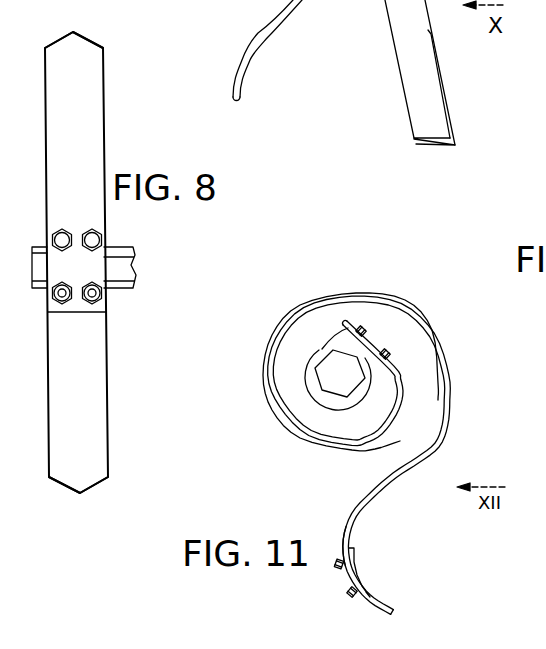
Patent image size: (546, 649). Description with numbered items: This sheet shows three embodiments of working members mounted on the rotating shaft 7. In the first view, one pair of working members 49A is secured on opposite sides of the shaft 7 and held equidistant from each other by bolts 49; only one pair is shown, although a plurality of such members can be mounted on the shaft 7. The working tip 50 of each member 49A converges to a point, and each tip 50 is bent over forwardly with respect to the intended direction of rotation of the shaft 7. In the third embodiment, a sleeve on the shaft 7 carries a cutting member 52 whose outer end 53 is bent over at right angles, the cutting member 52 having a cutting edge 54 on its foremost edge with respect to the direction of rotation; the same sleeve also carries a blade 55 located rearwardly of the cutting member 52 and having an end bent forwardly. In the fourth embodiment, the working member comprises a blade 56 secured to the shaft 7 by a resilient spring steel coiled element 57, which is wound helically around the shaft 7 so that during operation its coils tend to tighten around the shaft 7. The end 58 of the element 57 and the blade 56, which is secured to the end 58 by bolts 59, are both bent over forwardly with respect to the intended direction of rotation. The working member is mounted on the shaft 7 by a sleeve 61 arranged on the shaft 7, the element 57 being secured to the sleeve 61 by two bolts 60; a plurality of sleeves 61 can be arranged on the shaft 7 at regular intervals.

In FIG. 8, the shaft 7 is at (127, 266).
In FIG. 11, the shaft 7 is at (326, 362).
In FIG. 8, the bolts 49 is at (88, 229).
In FIG. 8, the working members 49A is at (103, 108).
In FIG. 8, the working tip 50 is at (97, 44).
In FIG. 9, the cutting member 52 is at (386, 20).
In FIG. 9, the outer end 53 is at (431, 146).
In FIG. 9, the cutting edge 54 is at (452, 115).
In FIG. 9, the blade 55 is at (263, 40).
In FIG. 11, the blade 56 is at (382, 603).
In FIG. 11, the resilient spring steel coiled element 57 is at (451, 377).
In FIG. 11, the end of the coiled element 58 is at (352, 531).
In FIG. 11, the bolts 59 is at (348, 593).
In FIG. 11, the bolts 60 is at (381, 334).
In FIG. 11, the sleeve 61 is at (311, 386).